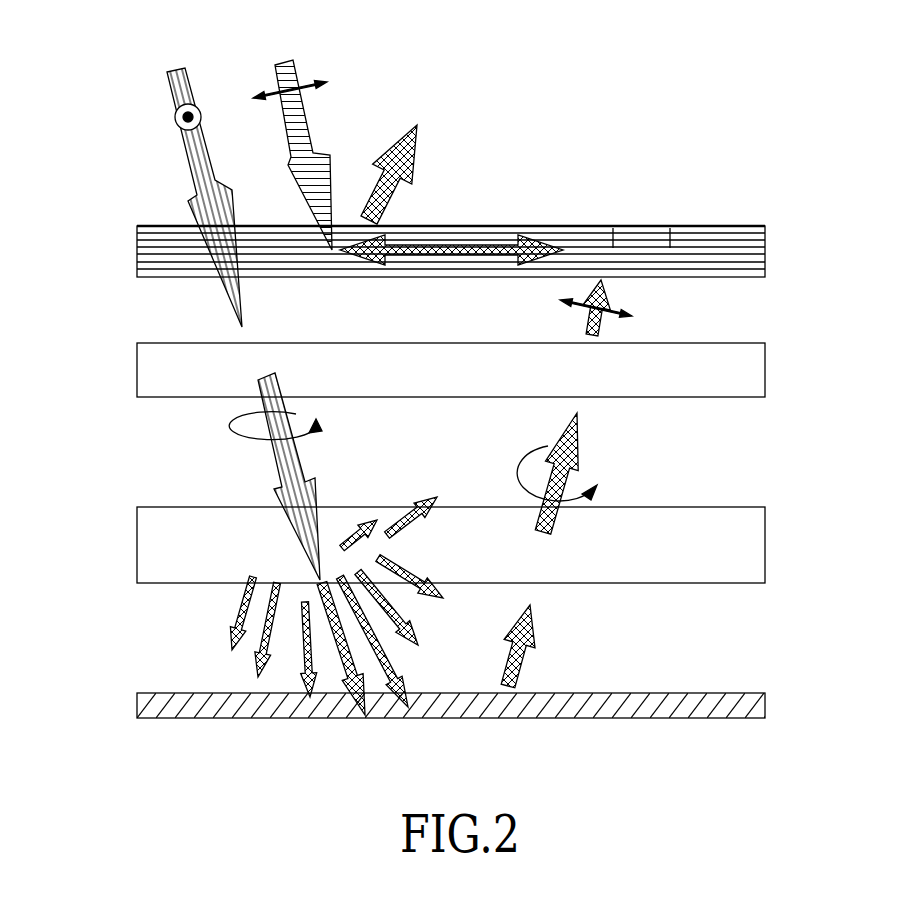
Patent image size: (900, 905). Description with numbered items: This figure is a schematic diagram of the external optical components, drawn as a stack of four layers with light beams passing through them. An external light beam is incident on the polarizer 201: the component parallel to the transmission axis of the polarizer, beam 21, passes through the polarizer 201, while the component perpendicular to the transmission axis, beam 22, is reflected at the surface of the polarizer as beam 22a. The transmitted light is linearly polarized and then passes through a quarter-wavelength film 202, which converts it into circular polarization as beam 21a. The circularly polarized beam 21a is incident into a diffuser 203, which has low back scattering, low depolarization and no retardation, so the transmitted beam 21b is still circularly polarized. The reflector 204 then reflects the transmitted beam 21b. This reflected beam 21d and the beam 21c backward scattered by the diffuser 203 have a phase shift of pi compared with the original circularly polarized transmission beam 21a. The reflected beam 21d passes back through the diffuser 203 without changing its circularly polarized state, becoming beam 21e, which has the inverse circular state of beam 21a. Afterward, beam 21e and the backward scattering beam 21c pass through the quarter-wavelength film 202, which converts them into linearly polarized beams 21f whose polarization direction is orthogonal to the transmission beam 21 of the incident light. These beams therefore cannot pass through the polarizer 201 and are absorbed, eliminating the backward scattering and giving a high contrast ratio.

The beam 21 is at (192, 177).
The beam 22 is at (292, 132).
The reflected beam 22a is at (410, 152).
The polarizer 201 is at (767, 255).
The quarter-wavelength film 202 is at (765, 372).
The diffuser 203 is at (765, 560).
The reflector 204 is at (765, 707).
The circularly polarized beam 21a is at (240, 420).
The transmitted beam 21b is at (343, 655).
The backward scattered beam 21c is at (413, 525).
The reflected beam 21d is at (530, 670).
The beam 21e is at (582, 435).
The linear polarized beams 21f is at (617, 292).